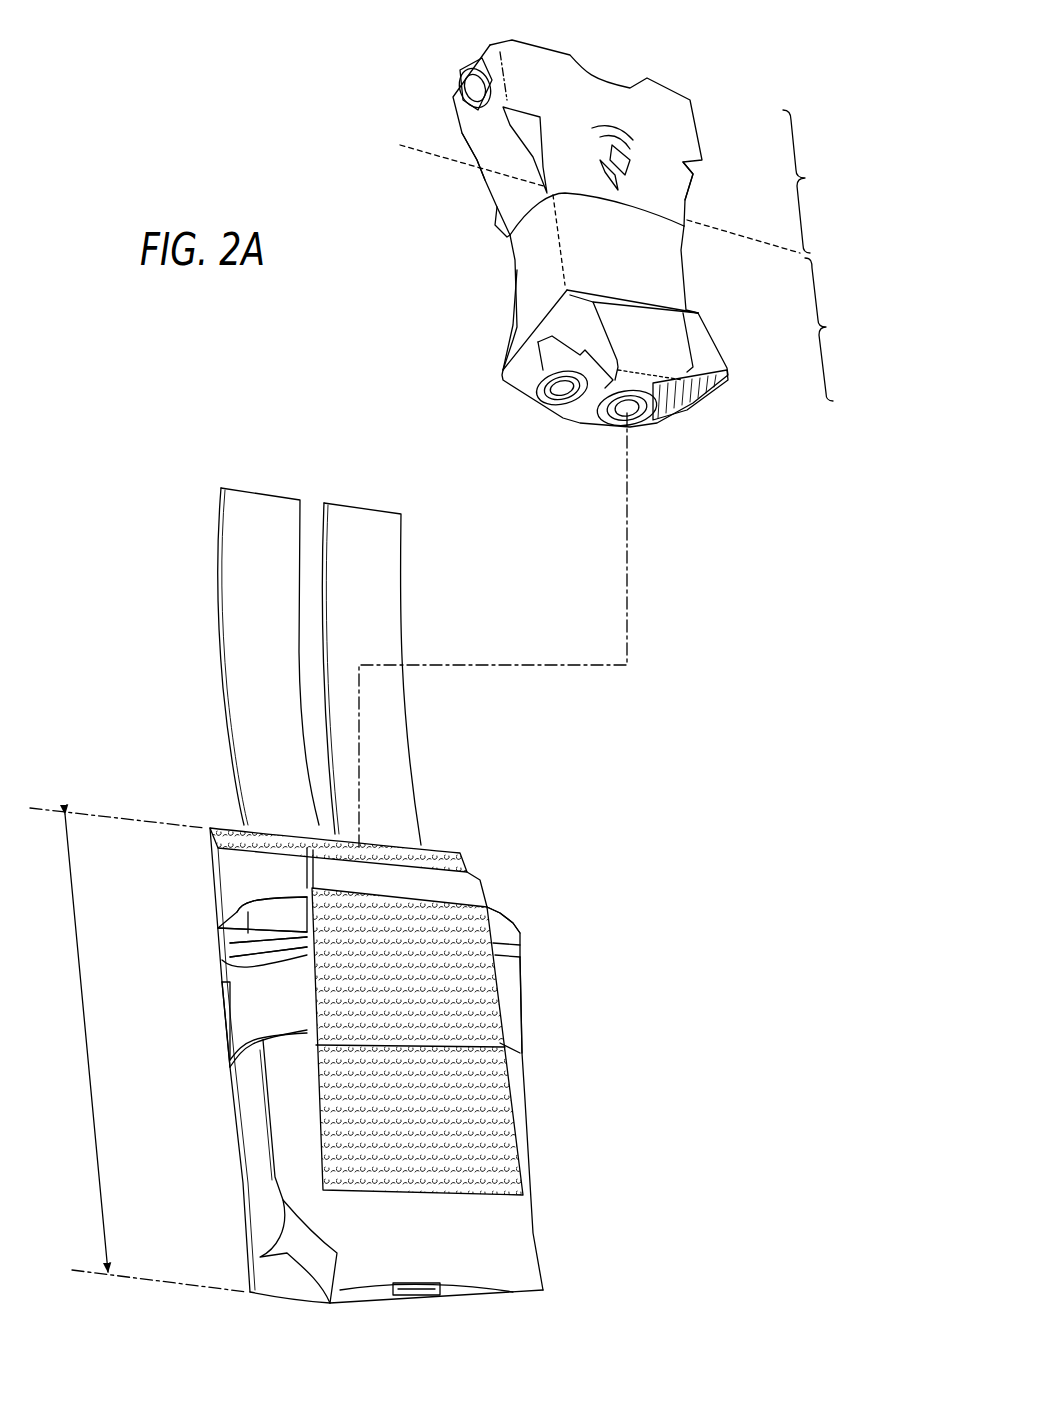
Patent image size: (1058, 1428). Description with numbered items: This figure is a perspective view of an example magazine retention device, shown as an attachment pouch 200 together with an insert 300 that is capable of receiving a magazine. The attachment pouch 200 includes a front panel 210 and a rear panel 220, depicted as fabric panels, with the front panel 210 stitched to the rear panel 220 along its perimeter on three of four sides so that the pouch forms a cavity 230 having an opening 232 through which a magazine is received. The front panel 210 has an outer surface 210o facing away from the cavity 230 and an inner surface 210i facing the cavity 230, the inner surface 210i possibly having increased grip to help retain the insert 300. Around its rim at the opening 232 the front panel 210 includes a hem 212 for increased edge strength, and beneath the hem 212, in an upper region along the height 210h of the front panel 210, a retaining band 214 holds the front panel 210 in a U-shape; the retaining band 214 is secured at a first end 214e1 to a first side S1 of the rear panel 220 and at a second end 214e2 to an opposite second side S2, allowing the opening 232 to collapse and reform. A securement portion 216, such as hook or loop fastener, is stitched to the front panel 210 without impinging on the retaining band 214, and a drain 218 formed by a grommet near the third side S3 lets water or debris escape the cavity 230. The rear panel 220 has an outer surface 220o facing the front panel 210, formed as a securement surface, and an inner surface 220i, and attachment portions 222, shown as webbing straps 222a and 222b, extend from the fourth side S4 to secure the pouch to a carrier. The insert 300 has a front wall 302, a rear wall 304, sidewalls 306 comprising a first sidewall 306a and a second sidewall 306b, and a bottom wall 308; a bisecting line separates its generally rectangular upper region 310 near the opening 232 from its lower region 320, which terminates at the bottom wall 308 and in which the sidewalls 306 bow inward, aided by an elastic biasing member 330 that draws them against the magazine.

The attachment pouch 200 is at (123, 761).
The front panel 210 is at (290, 1138).
The height of the front panel 210h is at (138, 1050).
The inner surface of the front panel 210i is at (500, 910).
The outer surface of the front panel 210o is at (497, 1223).
The hem 212 is at (217, 948).
The retaining band 214 is at (227, 1050).
The first end of the retaining band 214e1 is at (218, 1013).
The second end of the retaining band 214e2 is at (517, 1020).
The securement portion 216 is at (512, 1117).
The drain 218 is at (427, 1303).
The rear panel 220 is at (225, 821).
The inner surface of the rear panel 220i is at (203, 842).
The outer surface of the rear panel 220o is at (288, 865).
The attachment portions 222 is at (310, 666).
The first attachment portion 222a is at (217, 579).
The second attachment portion 222b is at (401, 590).
The cavity 230 is at (240, 898).
The opening 232 is at (262, 914).
The first side of the rear panel S1 is at (243, 1222).
The second side of the rear panel S2 is at (538, 1258).
The third side of the rear panel S3 is at (383, 1303).
The fourth side of the rear panel S4 is at (446, 854).
The insert 300 is at (663, 55).
The front wall 302 is at (675, 127).
The rear wall 304 is at (497, 230).
The sidewalls 306 is at (495, 147).
The first sidewall 306a is at (473, 156).
The second sidewall 306b is at (692, 202).
The bottom wall 308 is at (662, 393).
The upper region 310 is at (575, 146).
The lower region 320 is at (642, 334).
The biasing member 330 is at (468, 82).